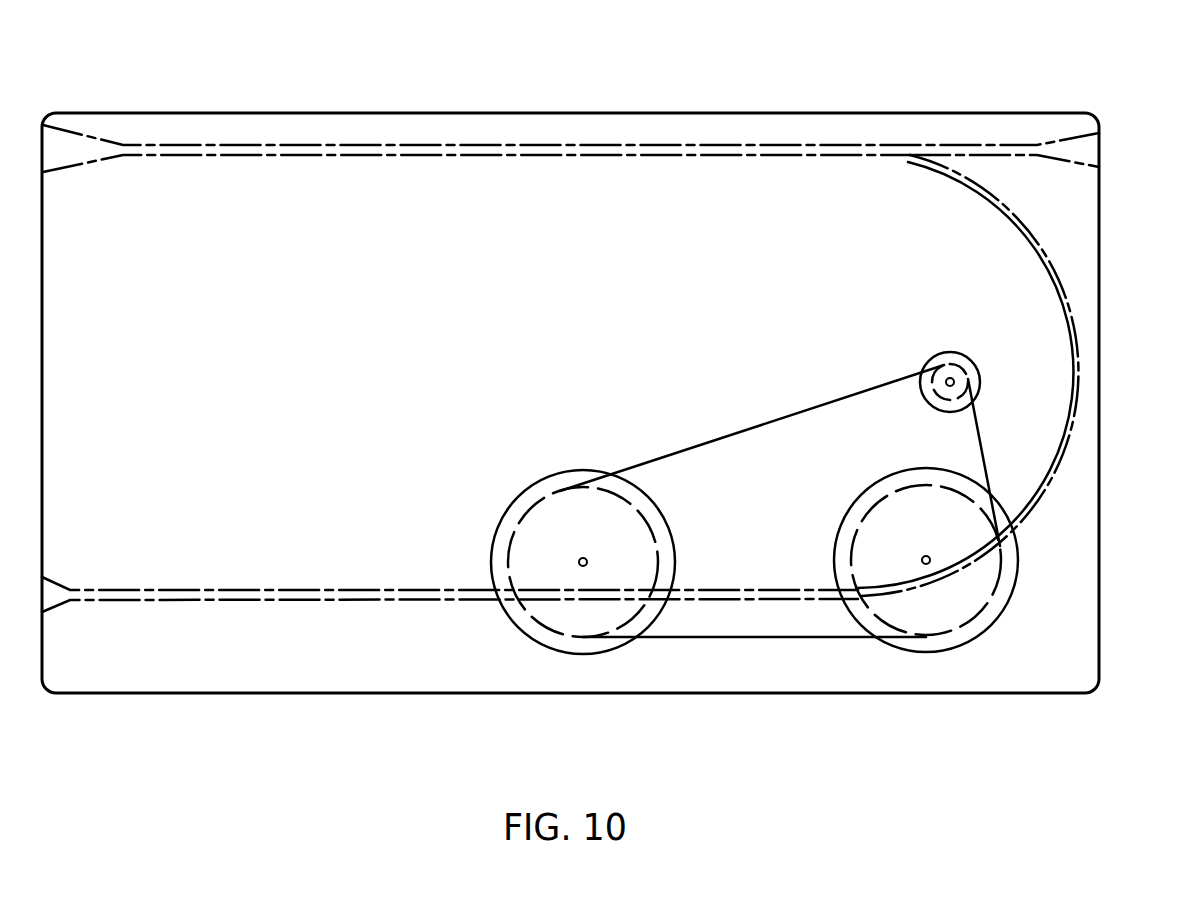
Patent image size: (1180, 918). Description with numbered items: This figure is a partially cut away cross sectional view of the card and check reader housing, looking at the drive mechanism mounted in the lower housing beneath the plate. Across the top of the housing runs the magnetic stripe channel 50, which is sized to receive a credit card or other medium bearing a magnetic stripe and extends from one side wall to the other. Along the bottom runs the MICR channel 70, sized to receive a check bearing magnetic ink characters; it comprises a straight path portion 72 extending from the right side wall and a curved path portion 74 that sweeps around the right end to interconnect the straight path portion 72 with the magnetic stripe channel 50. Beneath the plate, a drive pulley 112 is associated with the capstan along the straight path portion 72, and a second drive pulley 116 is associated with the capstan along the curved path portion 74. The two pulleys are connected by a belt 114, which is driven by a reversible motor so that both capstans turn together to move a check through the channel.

The magnetic stripe channel 50 is at (535, 147).
The MICR channel 70 is at (125, 592).
The straight path portion 72 is at (315, 596).
The curved path portion 74 is at (1068, 437).
The drive pulley 112 is at (537, 637).
The belt 114 is at (707, 635).
The drive pulley 116 is at (930, 643).